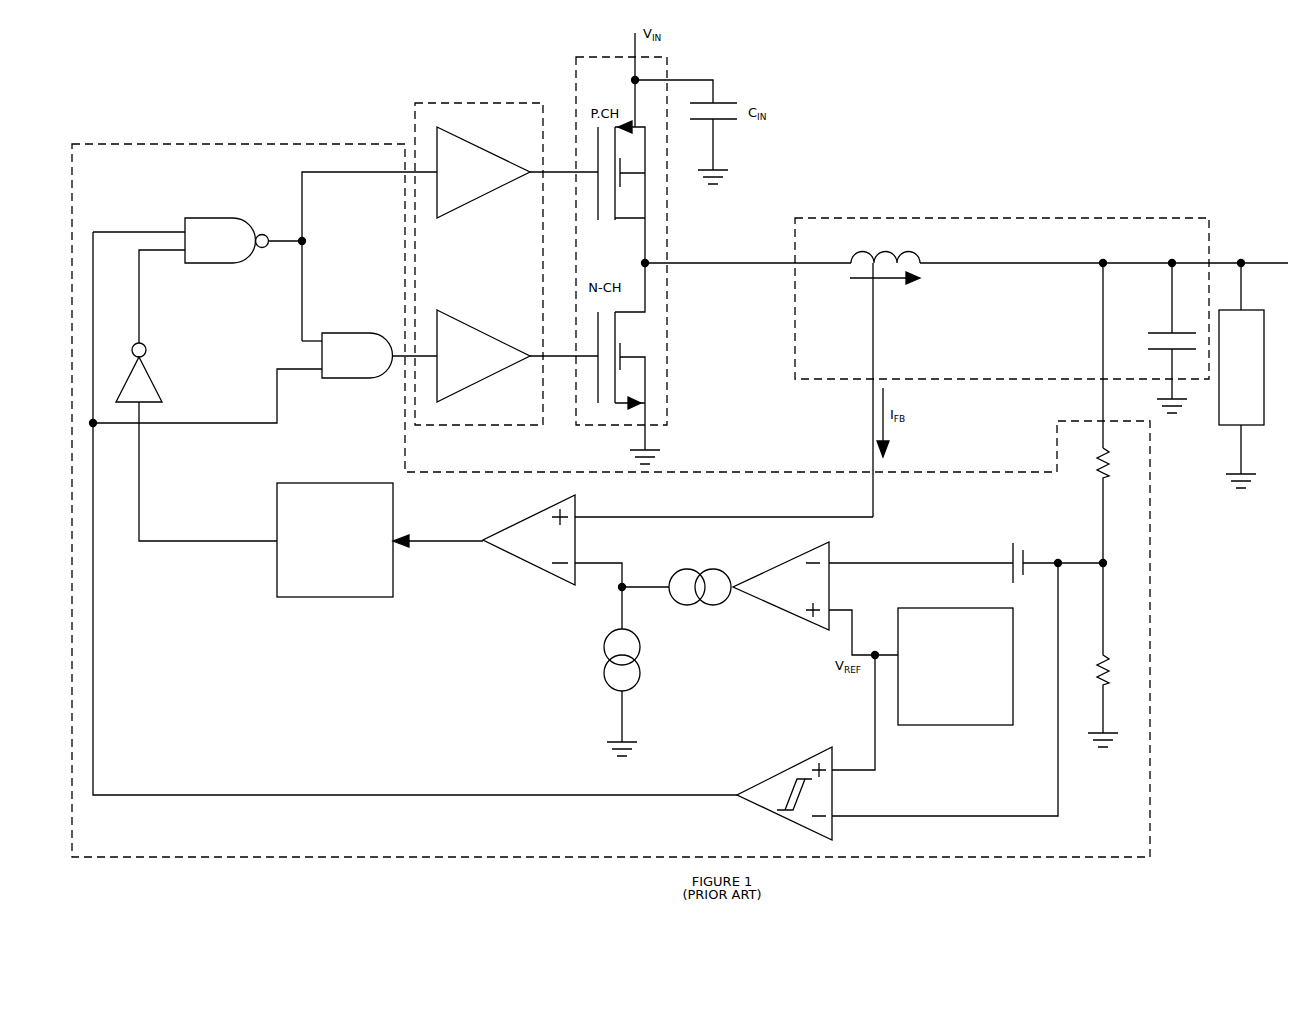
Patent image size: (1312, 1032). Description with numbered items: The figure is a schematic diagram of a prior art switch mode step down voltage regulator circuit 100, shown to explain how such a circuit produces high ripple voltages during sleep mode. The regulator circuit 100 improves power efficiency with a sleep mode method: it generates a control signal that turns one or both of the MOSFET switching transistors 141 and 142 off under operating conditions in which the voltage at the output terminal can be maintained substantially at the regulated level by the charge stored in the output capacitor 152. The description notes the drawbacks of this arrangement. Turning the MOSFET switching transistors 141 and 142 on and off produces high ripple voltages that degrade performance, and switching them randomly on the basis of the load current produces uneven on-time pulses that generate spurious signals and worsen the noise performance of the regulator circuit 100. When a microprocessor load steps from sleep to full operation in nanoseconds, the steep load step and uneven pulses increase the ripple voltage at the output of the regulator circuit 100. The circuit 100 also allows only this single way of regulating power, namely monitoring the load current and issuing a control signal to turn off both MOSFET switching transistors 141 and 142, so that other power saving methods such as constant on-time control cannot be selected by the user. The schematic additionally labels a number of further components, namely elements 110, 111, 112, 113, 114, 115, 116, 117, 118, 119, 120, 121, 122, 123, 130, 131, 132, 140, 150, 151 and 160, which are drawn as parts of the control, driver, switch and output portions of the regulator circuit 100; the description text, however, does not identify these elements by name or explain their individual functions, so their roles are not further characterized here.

The switch mode voltage regulator circuit 100 is at (878, 142).
The controller 110 is at (1150, 560).
The feedback resistor R1 111 is at (1100, 462).
The feedback resistor R2 112 is at (1100, 660).
The offset voltage source 113 is at (1027, 556).
The reference 114 is at (925, 608).
The gain amplifier 115 is at (765, 608).
The hysteretic comparator 116 is at (775, 766).
The current source 117 is at (687, 569).
The current source 118 is at (640, 650).
The current comparator 119 is at (513, 557).
The constant off-time one-shot 120 is at (280, 600).
The inverter 121 is at (155, 380).
The NAND gate 122 is at (202, 216).
The AND gate 123 is at (326, 333).
The driver block 130 is at (460, 103).
The P-channel driver 131 is at (470, 202).
The N-channel driver 132 is at (460, 321).
The switch block 140 is at (598, 57).
The MOSFET switching transistor 141 is at (633, 220).
The MOSFET switching transistor 142 is at (620, 337).
The output filter 150 is at (1010, 218).
The inductor 151 is at (920, 245).
The output capacitor 152 is at (1163, 350).
The load resistor 160 is at (1264, 425).